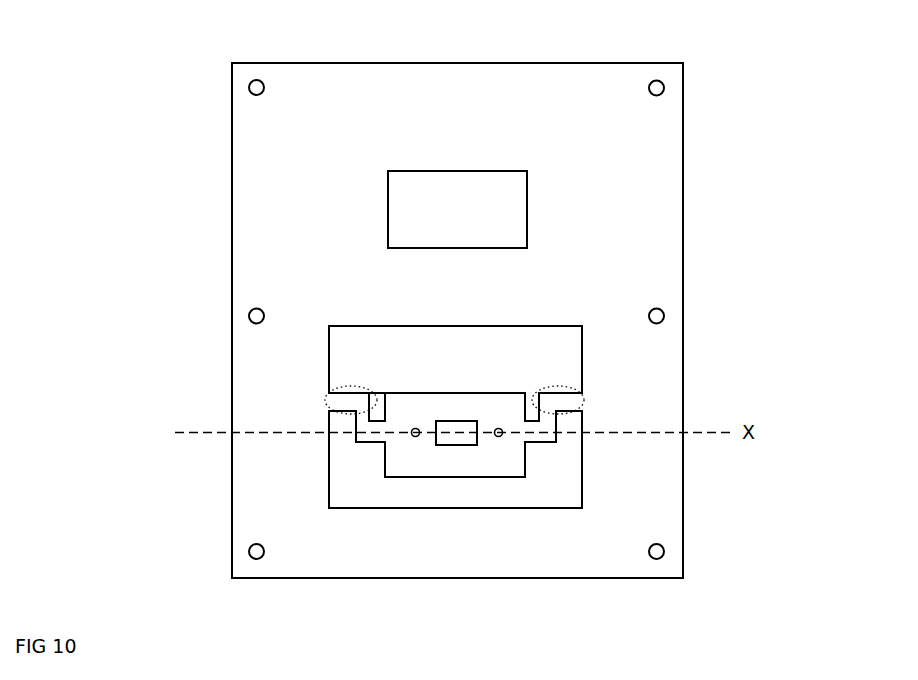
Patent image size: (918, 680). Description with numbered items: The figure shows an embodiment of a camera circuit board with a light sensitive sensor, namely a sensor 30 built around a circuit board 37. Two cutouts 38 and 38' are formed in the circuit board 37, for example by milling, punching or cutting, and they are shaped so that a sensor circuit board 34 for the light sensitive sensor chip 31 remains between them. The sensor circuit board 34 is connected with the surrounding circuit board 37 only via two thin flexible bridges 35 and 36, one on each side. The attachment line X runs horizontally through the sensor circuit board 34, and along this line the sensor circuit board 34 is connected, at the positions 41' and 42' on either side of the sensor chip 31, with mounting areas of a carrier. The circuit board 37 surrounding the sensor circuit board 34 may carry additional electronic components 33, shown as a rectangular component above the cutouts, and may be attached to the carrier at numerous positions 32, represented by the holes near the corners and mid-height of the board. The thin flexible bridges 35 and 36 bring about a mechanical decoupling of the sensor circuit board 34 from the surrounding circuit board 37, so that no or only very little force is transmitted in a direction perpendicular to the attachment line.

The sensor 30 is at (150, 98).
The light sensitive sensor chip 31 is at (457, 420).
The positions 32 is at (265, 83).
The additional electronic components 33 is at (428, 171).
The sensor circuit board 34 is at (412, 393).
The bridge 35 is at (585, 393).
The bridge 36 is at (327, 392).
The circuit board 37 is at (683, 233).
The cutout 38 is at (471, 346).
The cutout 38' is at (455, 485).
The position 41' is at (525, 498).
The position 42' is at (369, 490).